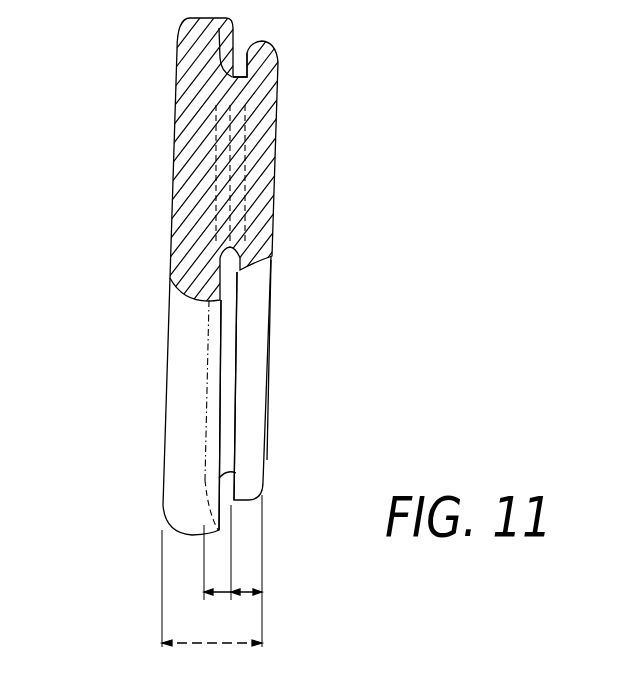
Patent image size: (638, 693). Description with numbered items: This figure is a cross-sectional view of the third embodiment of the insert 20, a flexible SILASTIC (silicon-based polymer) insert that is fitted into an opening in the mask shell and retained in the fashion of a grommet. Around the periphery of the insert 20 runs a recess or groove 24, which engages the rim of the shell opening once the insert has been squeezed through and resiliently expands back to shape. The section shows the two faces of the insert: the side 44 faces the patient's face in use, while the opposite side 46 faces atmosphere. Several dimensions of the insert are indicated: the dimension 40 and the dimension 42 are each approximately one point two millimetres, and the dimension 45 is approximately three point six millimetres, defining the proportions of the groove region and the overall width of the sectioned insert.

The insert 20 is at (170, 278).
The recess or groove 24 is at (237, 76).
The dimension 40 is at (222, 590).
The dimension 42 is at (250, 590).
The side 44 is at (271, 325).
The dimension 45 is at (230, 640).
The side 46 is at (167, 355).